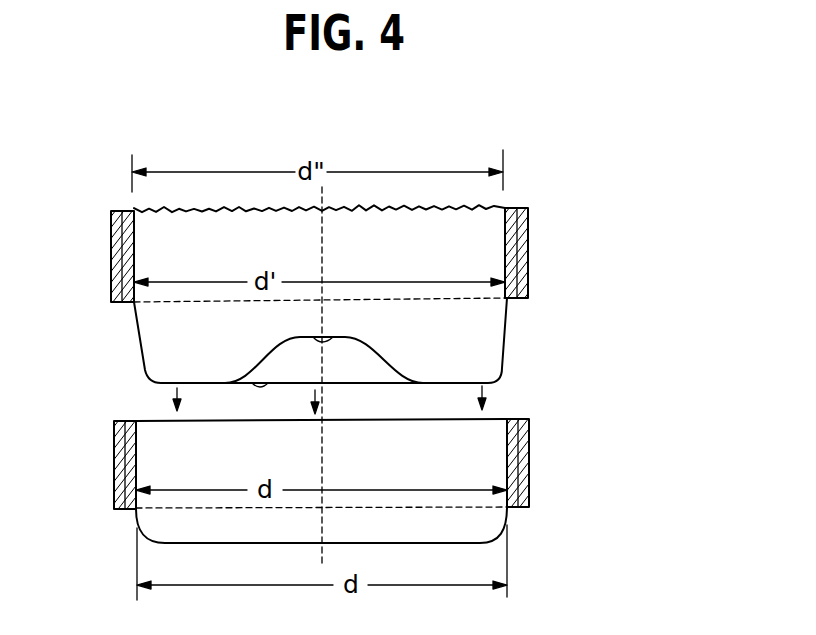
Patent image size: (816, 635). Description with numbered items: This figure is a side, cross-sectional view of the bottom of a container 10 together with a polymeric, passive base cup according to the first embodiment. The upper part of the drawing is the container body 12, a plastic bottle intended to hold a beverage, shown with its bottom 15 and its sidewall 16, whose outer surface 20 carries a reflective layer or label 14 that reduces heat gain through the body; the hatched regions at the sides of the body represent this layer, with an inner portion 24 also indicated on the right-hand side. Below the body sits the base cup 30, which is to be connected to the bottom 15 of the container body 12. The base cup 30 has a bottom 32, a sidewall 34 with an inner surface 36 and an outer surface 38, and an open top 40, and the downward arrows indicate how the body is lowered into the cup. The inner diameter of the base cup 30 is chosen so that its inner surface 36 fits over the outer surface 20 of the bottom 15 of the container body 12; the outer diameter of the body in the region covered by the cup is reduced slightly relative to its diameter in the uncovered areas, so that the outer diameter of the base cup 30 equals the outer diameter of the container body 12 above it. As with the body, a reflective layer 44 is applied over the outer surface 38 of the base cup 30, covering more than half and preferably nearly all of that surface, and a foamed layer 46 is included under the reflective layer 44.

The container 10 is at (697, 213).
The container body 12 is at (533, 176).
The reflective layer or label 14 is at (526, 232).
The bottom 15 is at (271, 383).
The sidewall 16 is at (134, 246).
The outer surface 20 is at (140, 337).
The inner layer of lid flange 24 is at (520, 274).
The base cup 30 is at (560, 503).
The bottom 32 is at (476, 543).
The sidewall 34 is at (137, 468).
The inner surface 36 is at (500, 422).
The outer surface 38 is at (530, 445).
The open top 40 is at (146, 421).
The reflective layer 44 is at (115, 500).
The foamed layer 46 is at (120, 455).